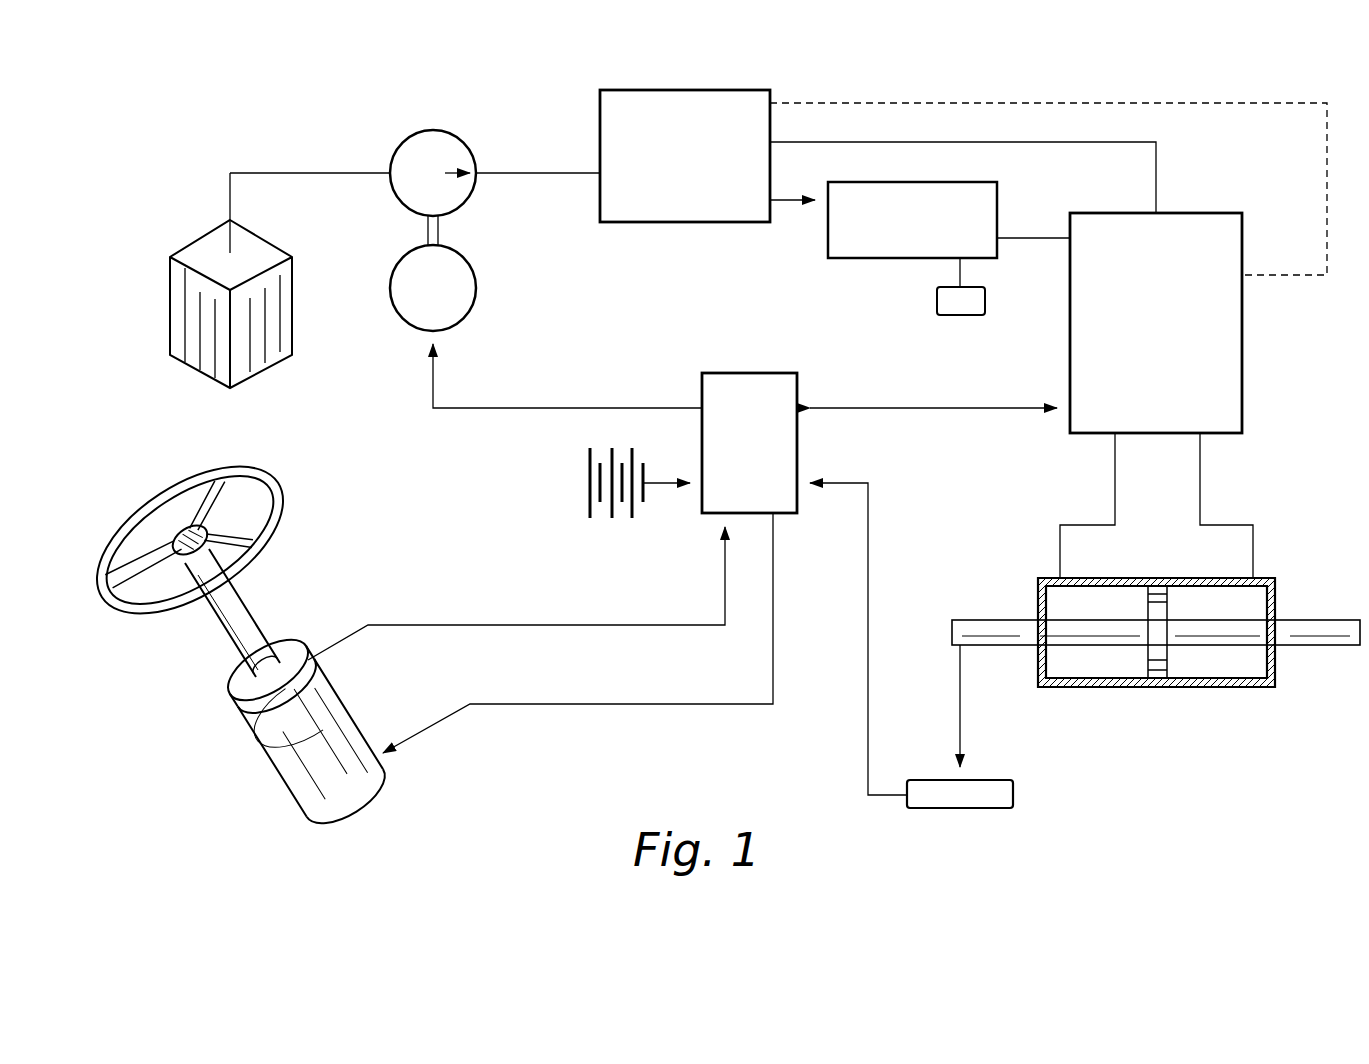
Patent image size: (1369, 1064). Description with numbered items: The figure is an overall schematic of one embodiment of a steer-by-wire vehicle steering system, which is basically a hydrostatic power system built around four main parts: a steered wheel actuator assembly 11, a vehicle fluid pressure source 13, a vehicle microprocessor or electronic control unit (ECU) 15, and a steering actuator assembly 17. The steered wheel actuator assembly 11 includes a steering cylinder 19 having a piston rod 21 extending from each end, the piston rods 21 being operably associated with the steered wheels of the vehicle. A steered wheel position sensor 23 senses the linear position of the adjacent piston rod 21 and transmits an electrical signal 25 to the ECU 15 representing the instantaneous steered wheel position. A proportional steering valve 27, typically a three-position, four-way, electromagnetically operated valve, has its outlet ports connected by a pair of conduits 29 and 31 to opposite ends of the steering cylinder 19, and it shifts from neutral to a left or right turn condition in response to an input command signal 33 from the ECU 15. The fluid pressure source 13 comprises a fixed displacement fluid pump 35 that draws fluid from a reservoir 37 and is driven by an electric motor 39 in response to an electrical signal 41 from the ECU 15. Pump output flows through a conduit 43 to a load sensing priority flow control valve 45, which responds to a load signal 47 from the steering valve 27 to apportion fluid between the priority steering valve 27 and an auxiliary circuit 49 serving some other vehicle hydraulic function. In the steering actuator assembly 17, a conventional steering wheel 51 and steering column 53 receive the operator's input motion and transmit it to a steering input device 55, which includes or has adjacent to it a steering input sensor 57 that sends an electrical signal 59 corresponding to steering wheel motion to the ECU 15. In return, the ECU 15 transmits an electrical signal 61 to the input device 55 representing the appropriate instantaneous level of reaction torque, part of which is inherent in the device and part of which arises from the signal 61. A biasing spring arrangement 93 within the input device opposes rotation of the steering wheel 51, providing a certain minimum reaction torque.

The steered wheel actuator assembly 11 is at (1203, 722).
The vehicle fluid pressure source 13 is at (840, 68).
The electronic control unit 15 is at (733, 373).
The steering actuator assembly 17 is at (457, 767).
The steering cylinder 19 is at (1117, 687).
The piston rod 21 is at (980, 620).
The steered wheel position sensor 23 is at (1013, 793).
The electrical signal 25 is at (868, 655).
The proportional steering valve 27 is at (1197, 213).
The conduit 29 is at (1115, 473).
The conduit 31 is at (1200, 472).
The input command signal 33 is at (925, 408).
The fluid pump 35 is at (402, 140).
The reservoir 37 is at (205, 243).
The electric motor 39 is at (477, 293).
The electrical signal 41 is at (500, 410).
The conduit 43 is at (530, 173).
The load sensing priority flow control valve 45 is at (692, 90).
The load signal 47 is at (1015, 102).
The auxiliary circuit 49 is at (875, 258).
The steering wheel 51 is at (268, 540).
The steering column 53 is at (250, 617).
The steering input device 55 is at (287, 790).
The steering input sensor 57 is at (250, 708).
The electrical signal 59 is at (497, 625).
The electrical signal 61 is at (567, 704).
The biasing spring arrangement 93 is at (278, 722).